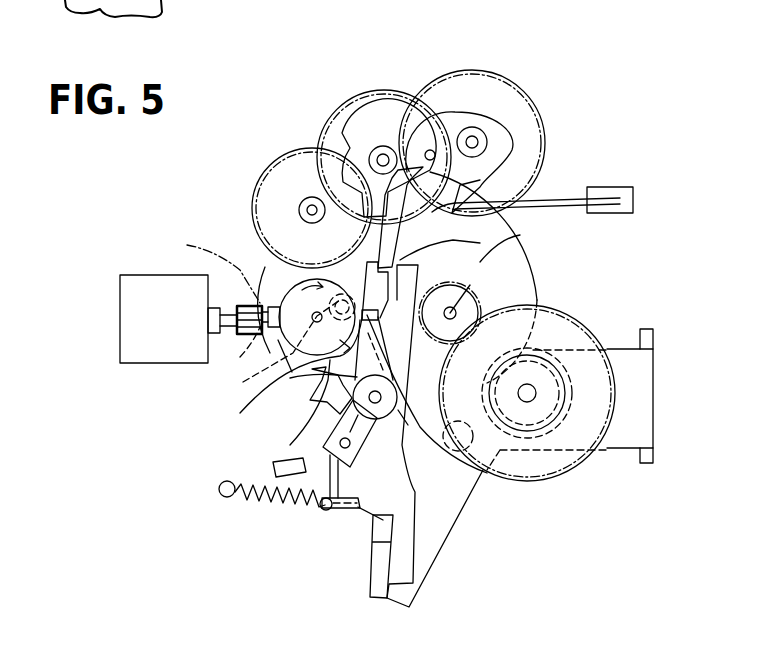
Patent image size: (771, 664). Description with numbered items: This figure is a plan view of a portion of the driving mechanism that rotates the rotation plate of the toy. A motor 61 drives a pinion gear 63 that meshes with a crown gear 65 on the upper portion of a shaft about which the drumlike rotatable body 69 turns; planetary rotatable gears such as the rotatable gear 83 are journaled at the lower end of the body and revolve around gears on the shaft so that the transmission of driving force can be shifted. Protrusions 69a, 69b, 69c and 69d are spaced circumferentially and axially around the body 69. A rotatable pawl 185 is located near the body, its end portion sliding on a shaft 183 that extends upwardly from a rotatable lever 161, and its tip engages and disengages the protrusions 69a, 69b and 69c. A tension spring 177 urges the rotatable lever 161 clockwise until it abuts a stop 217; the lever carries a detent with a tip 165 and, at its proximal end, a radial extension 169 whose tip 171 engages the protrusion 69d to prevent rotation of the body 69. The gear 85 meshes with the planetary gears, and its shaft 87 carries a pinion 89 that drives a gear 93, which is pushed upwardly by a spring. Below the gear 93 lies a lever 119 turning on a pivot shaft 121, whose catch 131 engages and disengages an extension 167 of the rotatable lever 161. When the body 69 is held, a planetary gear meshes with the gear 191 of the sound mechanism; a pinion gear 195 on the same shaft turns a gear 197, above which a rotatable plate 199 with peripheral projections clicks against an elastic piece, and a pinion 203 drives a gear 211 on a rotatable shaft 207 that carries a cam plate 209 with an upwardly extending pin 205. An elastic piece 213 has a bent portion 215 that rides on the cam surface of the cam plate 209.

The motor 61 is at (130, 310).
The pinion gear 63 is at (262, 300).
The crown gear 65 is at (215, 292).
The rotatable body 69 is at (313, 288).
The protrusion 69a is at (305, 375).
The protrusion 69b is at (280, 293).
The protrusion 69c is at (405, 338).
The protrusion 69d is at (268, 348).
The rotatable gear 83 is at (280, 349).
The gear 85 is at (490, 258).
The shaft 87 is at (480, 300).
The pinion 89 is at (525, 305).
The gear 93 is at (522, 472).
The lever 119 is at (627, 437).
The pivot shaft 121 is at (645, 463).
The catch 131 is at (372, 573).
The rotatable lever 161 is at (480, 243).
The tip 165 is at (488, 138).
The extension 167 is at (405, 557).
The radial extension 169 is at (320, 410).
The tip 171 is at (300, 395).
The tension spring 177 is at (245, 498).
The shaft 183 is at (377, 440).
The rotatable pawl 185 is at (341, 512).
The gear 191 is at (308, 197).
The pinion gear 195 is at (268, 165).
The gear 197 is at (328, 117).
The rotatable plate 199 is at (385, 115).
The pinion 203 is at (372, 150).
The pin 205 is at (440, 150).
The rotatable shaft 207 is at (488, 120).
The cam plate 209 is at (427, 150).
The gear 211 is at (453, 80).
The elastic piece 213 is at (556, 192).
The bent portion 215 is at (480, 195).
The stop 217 is at (272, 465).